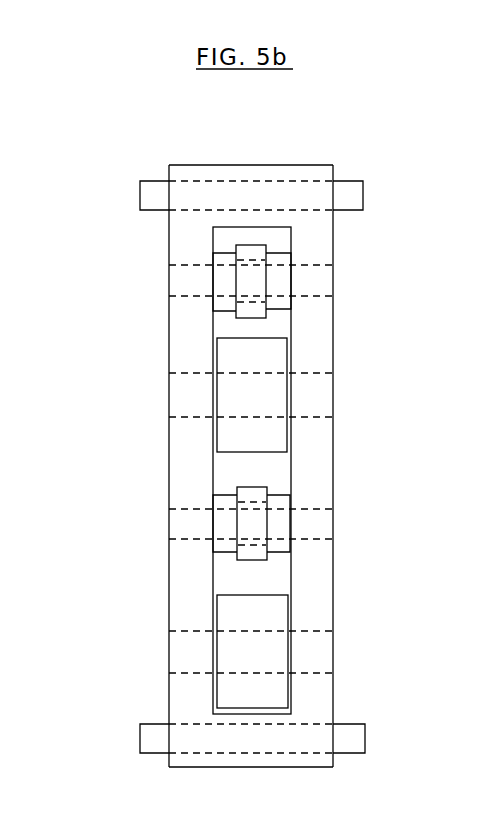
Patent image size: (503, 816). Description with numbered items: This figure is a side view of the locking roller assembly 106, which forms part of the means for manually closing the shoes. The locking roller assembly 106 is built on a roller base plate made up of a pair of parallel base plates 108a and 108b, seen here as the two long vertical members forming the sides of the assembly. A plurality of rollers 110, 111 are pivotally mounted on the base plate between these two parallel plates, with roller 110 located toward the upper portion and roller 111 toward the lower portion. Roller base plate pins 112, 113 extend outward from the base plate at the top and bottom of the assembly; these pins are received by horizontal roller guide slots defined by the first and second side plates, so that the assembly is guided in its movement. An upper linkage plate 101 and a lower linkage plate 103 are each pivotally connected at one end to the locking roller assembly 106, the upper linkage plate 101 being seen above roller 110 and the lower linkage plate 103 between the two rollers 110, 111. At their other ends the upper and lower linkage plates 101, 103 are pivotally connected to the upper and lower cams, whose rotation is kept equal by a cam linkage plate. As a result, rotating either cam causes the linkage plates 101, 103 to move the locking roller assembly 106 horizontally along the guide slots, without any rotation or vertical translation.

The locking roller assembly 106 is at (368, 117).
The base plate 108a is at (181, 472).
The base plate 108b is at (319, 447).
The roller base plate pin 112 is at (366, 182).
The roller base plate pin 113 is at (368, 742).
The upper linkage plate 101 is at (258, 251).
The roller 110 is at (266, 359).
The lower linkage plate 103 is at (274, 562).
The roller 111 is at (273, 616).